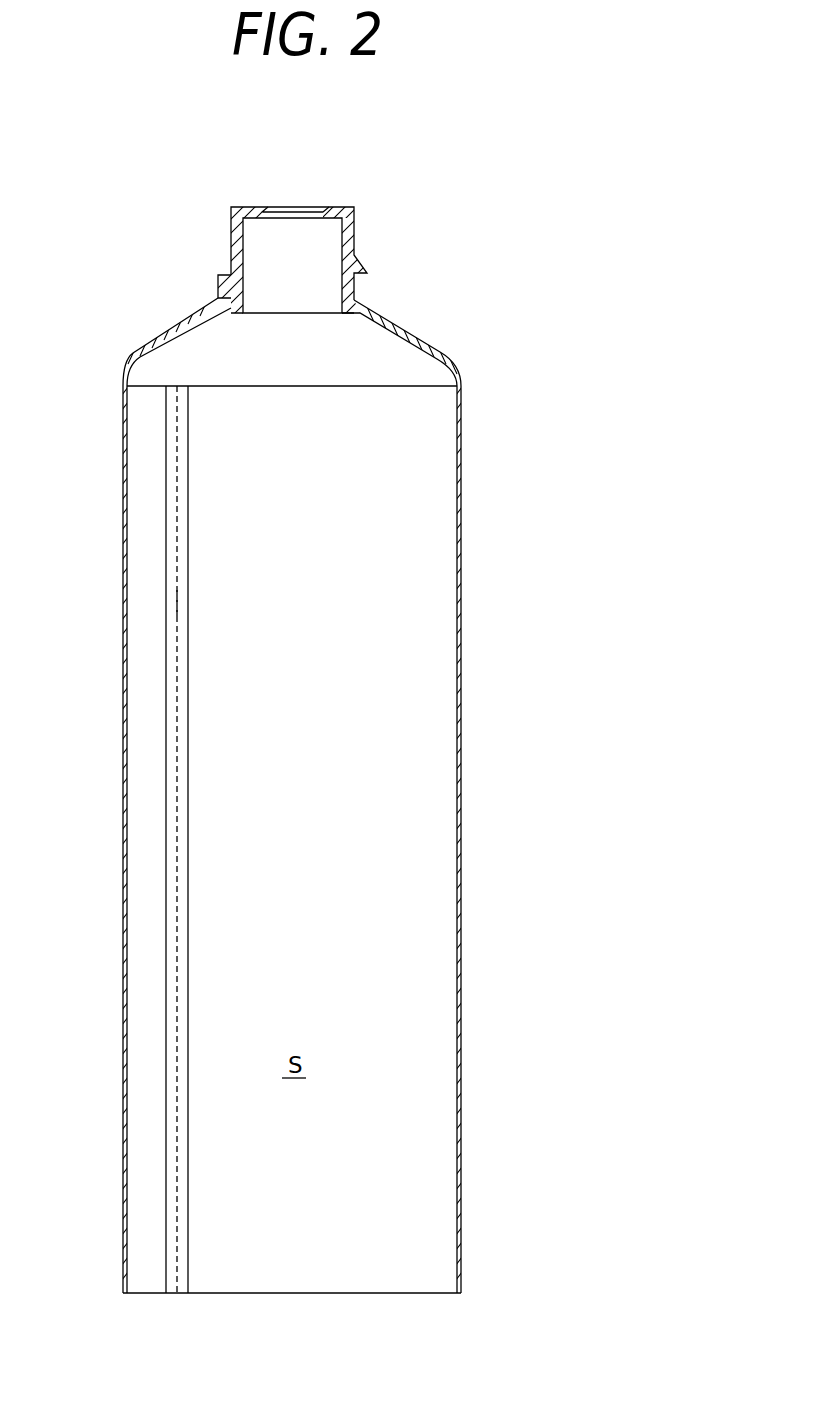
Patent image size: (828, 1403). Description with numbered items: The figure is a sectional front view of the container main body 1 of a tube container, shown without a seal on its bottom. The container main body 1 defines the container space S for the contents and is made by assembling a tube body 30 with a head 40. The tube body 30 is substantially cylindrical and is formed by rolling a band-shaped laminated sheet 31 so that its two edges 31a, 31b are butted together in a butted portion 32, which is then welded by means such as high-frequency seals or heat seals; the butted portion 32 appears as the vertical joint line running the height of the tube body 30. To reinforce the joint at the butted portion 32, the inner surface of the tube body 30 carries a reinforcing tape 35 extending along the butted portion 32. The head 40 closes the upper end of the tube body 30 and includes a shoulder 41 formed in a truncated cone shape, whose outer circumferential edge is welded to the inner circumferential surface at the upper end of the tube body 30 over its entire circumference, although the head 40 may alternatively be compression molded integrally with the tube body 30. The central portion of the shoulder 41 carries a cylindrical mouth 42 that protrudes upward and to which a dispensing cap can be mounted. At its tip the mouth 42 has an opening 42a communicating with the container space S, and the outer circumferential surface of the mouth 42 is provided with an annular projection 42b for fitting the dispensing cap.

The container main body 1 is at (572, 263).
The tube body 30 is at (304, 837).
The laminated sheet 31 is at (459, 823).
The edge 31a is at (179, 605).
The edge 31b is at (178, 682).
The butted portion 32 is at (178, 549).
The reinforcing tape 35 is at (190, 750).
The head 40 is at (314, 311).
The shoulder 41 is at (385, 316).
The mouth 42 is at (259, 254).
The opening 42a is at (297, 213).
The annular projection 42b is at (220, 275).